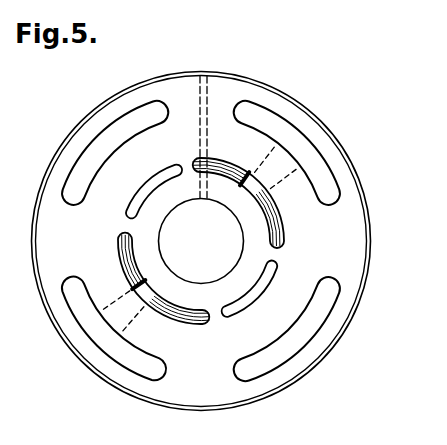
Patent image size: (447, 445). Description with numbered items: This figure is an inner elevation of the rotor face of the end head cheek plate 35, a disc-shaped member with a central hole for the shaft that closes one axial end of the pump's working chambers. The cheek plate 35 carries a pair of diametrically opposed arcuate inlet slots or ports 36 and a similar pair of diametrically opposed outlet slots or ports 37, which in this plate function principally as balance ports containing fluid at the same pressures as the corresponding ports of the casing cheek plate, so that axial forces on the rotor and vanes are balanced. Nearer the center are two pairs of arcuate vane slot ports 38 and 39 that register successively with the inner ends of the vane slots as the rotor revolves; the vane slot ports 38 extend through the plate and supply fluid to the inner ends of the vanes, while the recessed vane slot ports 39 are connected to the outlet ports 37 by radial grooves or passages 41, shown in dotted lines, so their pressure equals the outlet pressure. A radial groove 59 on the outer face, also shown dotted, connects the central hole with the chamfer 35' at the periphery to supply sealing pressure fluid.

The end head cheek plate 35 is at (201, 243).
The chamfer 35' is at (201, 241).
The arcuate inlet slots or ports 36 is at (73, 200).
The arcuate outlet slots or ports 37 is at (331, 200).
The vane slot ports 38 is at (152, 178).
The vane slot ports 39 is at (227, 167).
The radial grooves or passages 41 is at (280, 181).
The radial groove 59 is at (208, 93).